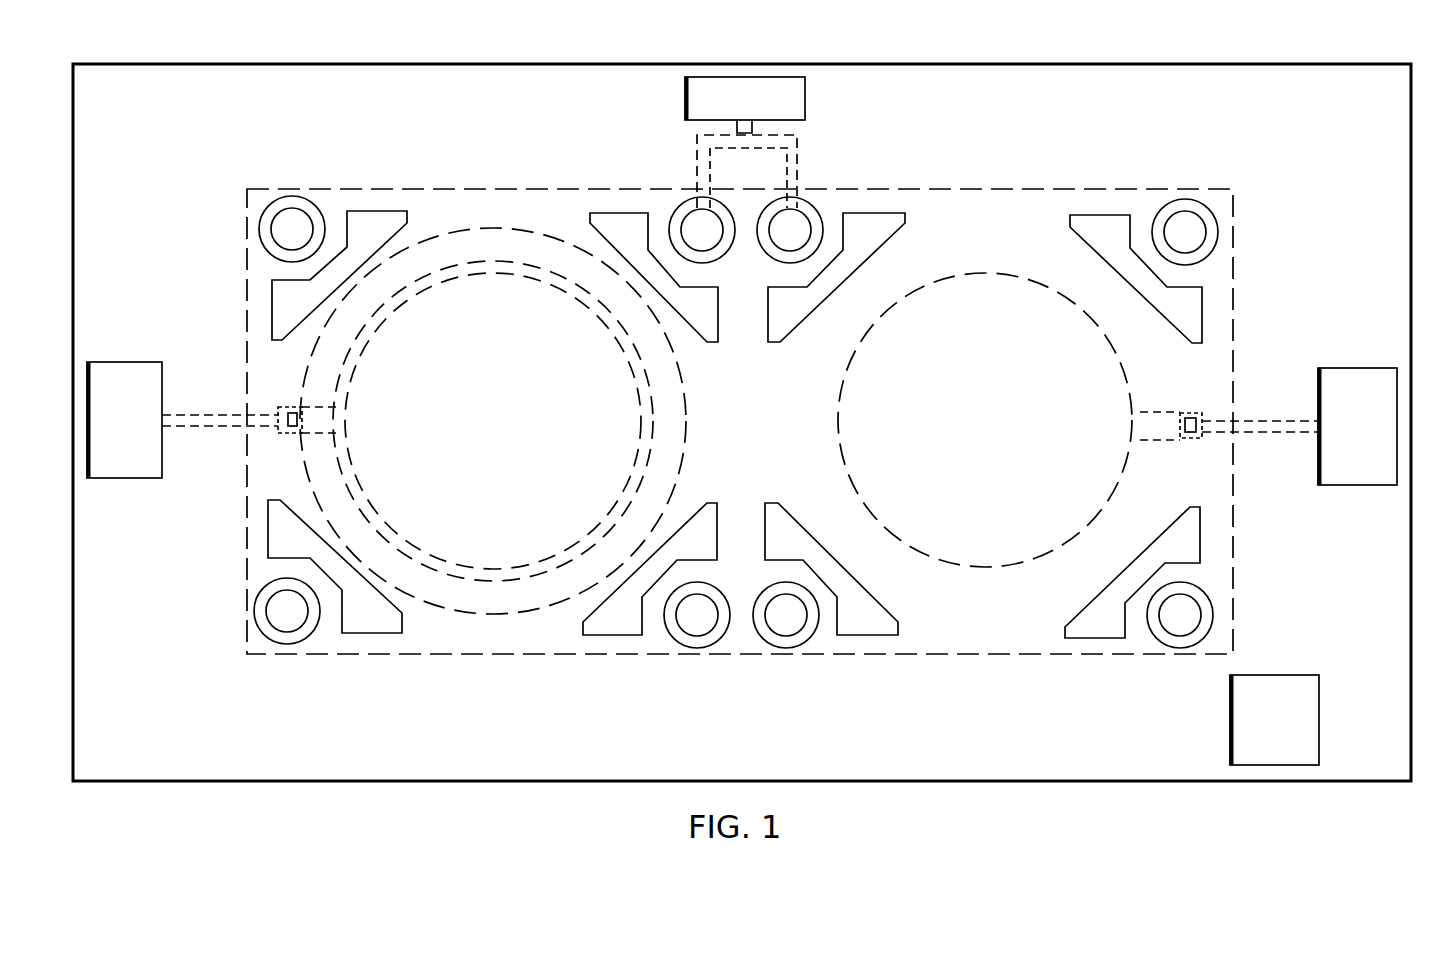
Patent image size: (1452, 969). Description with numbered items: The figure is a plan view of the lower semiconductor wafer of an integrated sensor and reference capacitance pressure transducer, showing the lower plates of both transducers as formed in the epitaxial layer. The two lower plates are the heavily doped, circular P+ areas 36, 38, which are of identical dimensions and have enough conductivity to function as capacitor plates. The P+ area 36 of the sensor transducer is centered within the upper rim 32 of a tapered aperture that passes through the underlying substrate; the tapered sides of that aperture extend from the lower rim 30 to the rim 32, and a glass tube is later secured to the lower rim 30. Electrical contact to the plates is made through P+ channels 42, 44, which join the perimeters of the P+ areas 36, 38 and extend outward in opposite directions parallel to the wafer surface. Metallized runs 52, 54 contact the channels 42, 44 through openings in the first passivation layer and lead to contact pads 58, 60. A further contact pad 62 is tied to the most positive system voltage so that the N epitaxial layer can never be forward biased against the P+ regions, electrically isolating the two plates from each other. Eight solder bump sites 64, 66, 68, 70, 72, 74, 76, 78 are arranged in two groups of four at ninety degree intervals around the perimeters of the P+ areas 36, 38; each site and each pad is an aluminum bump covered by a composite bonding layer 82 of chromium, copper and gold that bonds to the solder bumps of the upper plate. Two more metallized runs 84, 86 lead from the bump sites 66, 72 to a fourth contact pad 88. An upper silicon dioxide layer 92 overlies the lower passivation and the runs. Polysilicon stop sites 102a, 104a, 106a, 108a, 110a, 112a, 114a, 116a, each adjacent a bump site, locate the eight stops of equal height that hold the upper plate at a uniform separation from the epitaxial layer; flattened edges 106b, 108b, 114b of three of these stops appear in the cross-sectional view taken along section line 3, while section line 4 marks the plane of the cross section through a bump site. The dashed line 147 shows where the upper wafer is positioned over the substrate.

The section line 3- 3 is at (43, 378).
The section line 4- 4 is at (253, 227).
The rim 30 is at (490, 226).
The rim 32 is at (527, 265).
The P+ area 36 is at (553, 285).
The P+ area 38 is at (938, 280).
The P+ channel 42 is at (308, 407).
The P+ channel 44 is at (1153, 443).
The metallized run 52 is at (228, 412).
The metallized run 54 is at (1247, 422).
The contact pad 58 is at (141, 350).
The contact pad 60 is at (1348, 360).
The contact pad 62 is at (1278, 667).
The solder bump site 64 is at (294, 185).
The solder bump site 66 is at (682, 195).
The solder bump site 68 is at (303, 664).
The solder bump site 70 is at (702, 667).
The solder bump site 72 is at (818, 198).
The solder bump site 74 is at (1185, 182).
The solder bump site 76 is at (784, 668).
The solder bump site 78 is at (1180, 670).
The composite bonding layer 82 is at (798, 99).
The metallized run 84 is at (690, 158).
The metallized run 86 is at (800, 155).
The contact pad 88 is at (754, 62).
The upper silicon dioxide layer 92 is at (1148, 111).
The polysilicon stop site 102a is at (402, 612).
The polysilicon stop site 104a is at (697, 507).
The polysilicon stop site 106a is at (364, 211).
The flattened edge 106b is at (272, 305).
The polysilicon stop site 108a is at (722, 323).
The flattened edge 108b is at (713, 343).
The polysilicon stop site 110a is at (878, 597).
The polysilicon stop site 112a is at (1095, 597).
The polysilicon stop site 114a is at (860, 268).
The flattened edge 114b is at (776, 344).
The polysilicon stop site 116a is at (1097, 257).
The dashed line 147 is at (973, 188).